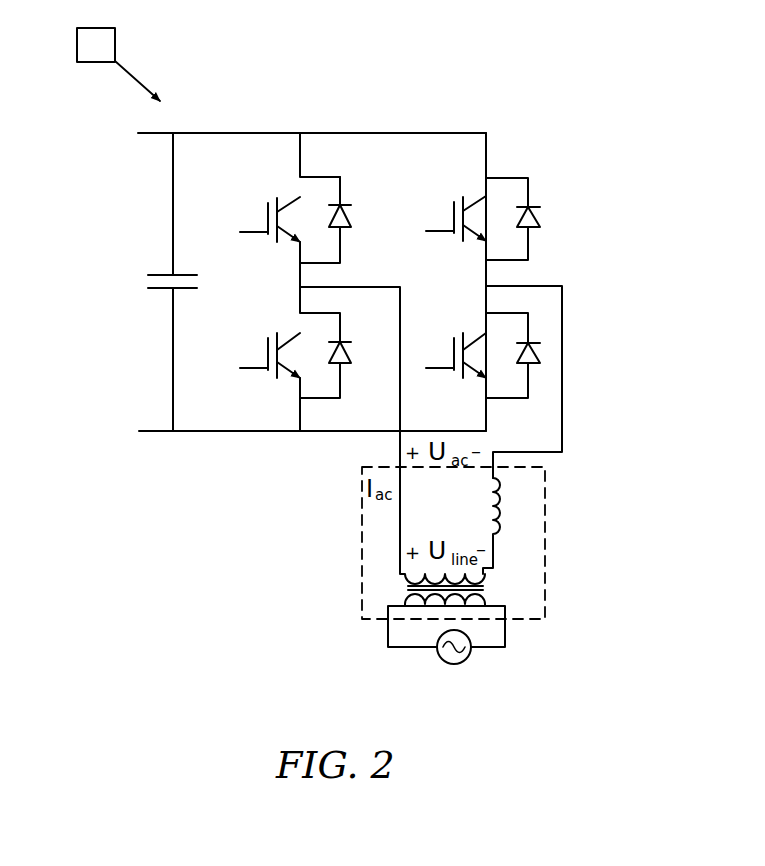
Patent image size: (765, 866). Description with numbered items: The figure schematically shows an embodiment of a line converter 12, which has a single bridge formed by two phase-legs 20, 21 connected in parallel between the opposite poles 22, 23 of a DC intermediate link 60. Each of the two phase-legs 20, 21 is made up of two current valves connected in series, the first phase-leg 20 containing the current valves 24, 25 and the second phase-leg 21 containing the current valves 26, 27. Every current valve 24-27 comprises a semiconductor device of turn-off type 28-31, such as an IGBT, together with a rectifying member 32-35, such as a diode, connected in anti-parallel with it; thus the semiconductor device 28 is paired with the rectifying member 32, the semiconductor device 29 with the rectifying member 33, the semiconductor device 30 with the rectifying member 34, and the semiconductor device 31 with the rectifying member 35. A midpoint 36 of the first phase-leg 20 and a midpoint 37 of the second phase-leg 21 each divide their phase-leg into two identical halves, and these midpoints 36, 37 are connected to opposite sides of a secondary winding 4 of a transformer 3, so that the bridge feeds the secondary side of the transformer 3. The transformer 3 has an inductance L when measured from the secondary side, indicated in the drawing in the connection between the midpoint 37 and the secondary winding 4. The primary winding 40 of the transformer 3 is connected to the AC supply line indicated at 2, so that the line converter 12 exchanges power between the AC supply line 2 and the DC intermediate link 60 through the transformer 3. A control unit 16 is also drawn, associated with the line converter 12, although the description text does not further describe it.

The AC supply line 2 is at (441, 663).
The transformer 3 is at (528, 592).
The secondary winding 4 is at (416, 578).
The line converter 12 is at (517, 103).
The control unit 16 is at (95, 62).
The phase-leg 20 is at (300, 146).
The phase-leg 21 is at (486, 150).
The pole 22 is at (230, 133).
The pole 23 is at (206, 432).
The current valve 24 is at (320, 188).
The current valve 25 is at (327, 328).
The current valve 26 is at (520, 185).
The current valve 27 is at (518, 323).
The semiconductor device of turn-off type 28 is at (268, 203).
The semiconductor device of turn-off type 29 is at (267, 348).
The semiconductor device of turn-off type 30 is at (453, 198).
The semiconductor device of turn-off type 31 is at (453, 345).
The rectifying member 32 is at (351, 213).
The rectifying member 33 is at (352, 364).
The rectifying member 34 is at (540, 214).
The rectifying member 35 is at (540, 352).
The midpoint 36 is at (290, 290).
The midpoint 37 is at (487, 285).
The primary winding 40 is at (410, 594).
The DC intermediate link 60 is at (173, 205).
The inductance L is at (506, 518).